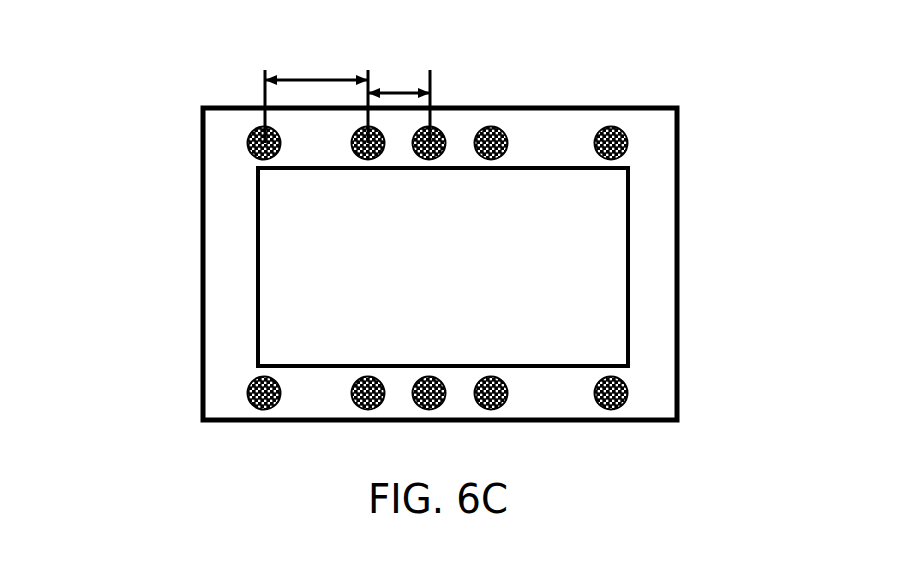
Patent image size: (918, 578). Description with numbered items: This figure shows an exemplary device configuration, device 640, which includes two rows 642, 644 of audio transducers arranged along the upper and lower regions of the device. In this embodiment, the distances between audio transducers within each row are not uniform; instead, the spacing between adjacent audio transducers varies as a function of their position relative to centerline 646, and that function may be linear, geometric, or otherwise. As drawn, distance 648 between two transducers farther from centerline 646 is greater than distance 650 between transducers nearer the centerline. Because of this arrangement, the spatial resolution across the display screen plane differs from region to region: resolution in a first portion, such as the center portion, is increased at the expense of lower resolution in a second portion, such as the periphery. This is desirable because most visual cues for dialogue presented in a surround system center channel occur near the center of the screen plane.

The device 640 is at (677, 268).
The first row of audio transducers 642 is at (230, 145).
The second row of audio transducers 644 is at (230, 397).
The centerline 646 is at (431, 106).
The distance 648 is at (313, 77).
The distance 650 is at (393, 88).